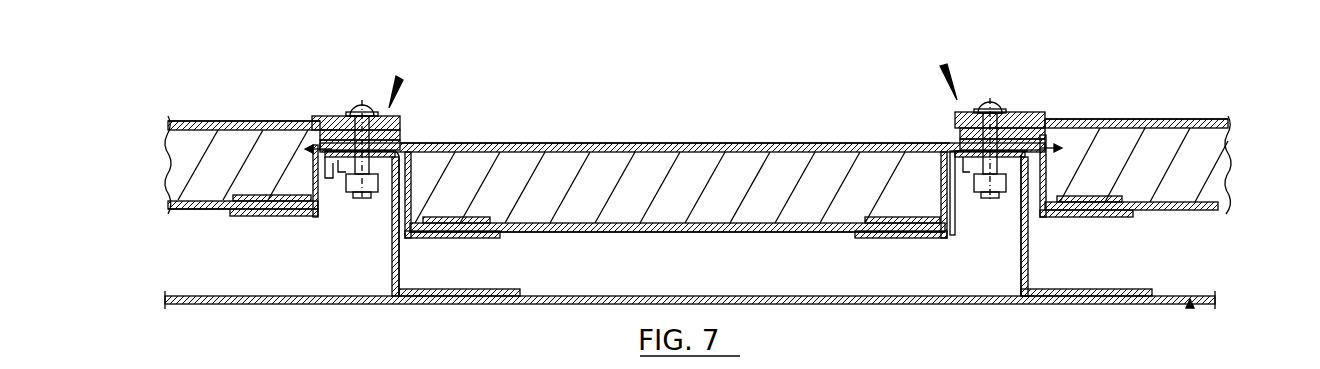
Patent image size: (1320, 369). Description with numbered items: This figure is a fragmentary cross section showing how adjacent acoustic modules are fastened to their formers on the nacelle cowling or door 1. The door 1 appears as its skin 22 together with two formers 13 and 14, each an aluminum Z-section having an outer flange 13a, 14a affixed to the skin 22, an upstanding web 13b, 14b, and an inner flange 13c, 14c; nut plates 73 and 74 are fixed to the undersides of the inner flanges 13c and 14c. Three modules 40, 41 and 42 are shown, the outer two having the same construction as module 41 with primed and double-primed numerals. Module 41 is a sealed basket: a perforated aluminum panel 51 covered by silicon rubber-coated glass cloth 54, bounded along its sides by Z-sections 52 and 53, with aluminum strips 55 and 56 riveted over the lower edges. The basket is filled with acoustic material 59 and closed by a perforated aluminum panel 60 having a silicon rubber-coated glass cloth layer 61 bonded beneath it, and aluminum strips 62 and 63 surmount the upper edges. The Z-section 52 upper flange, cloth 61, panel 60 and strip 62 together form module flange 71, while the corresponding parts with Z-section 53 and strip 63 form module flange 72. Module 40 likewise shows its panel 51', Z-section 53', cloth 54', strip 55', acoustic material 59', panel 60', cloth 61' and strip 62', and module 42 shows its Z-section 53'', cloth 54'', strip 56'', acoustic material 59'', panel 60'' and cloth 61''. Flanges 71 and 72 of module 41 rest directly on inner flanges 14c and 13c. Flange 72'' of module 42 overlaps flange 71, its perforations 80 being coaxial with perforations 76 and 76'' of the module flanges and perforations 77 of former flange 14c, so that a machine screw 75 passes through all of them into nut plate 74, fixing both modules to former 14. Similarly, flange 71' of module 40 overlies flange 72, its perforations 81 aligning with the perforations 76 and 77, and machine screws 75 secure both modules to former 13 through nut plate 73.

The nacelle cowling or door 1 is at (1190, 308).
The former 13 is at (392, 258).
The outer flange 13a is at (470, 296).
The upstanding web 13b is at (400, 270).
The inner flange 13c is at (340, 180).
The former 14 is at (1020, 262).
The outer flange 14a is at (1062, 295).
The upstanding web 14b is at (1030, 250).
The inner flange 14c is at (958, 212).
The door skin 22 is at (1080, 304).
The module 40 is at (265, 121).
The module 41 is at (625, 143).
The module 42 is at (1175, 119).
The perforated aluminum panel 51 is at (677, 252).
The perforated aluminum panel 51' is at (199, 229).
The Z-section 52 is at (941, 185).
The Z-section 53 is at (452, 195).
The Z-section 53' is at (274, 181).
The Z-section 53'' is at (1086, 176).
The silicon rubber-coated glass cloth 54 is at (677, 208).
The silicon rubber-coated glass cloth 54' is at (213, 198).
The silicon rubber-coated glass cloth 54'' is at (1163, 195).
The aluminum strip 55 is at (880, 199).
The aluminum strip 55' is at (272, 184).
The aluminum strip 56 is at (462, 207).
The aluminum strip 56'' is at (1128, 186).
The acoustic material 59 is at (750, 187).
The acoustic material 59' is at (243, 165).
The acoustic material 59'' is at (1144, 165).
The perforated aluminum panel 60 is at (675, 129).
The perforated aluminum panel 60' is at (240, 92).
The perforated aluminum panel 60'' is at (1157, 104).
The silicon rubber-coated glass cloth layer 61 is at (502, 187).
The silicon rubber-coated glass cloth layer 61' is at (139, 165).
The silicon rubber-coated glass cloth layer 61'' is at (1253, 165).
The aluminum strip 62 is at (975, 106).
The aluminum strip 62' is at (347, 101).
The aluminum strip 63 is at (405, 138).
The module flange 71 is at (1083, 148).
The module flange 71' is at (406, 85).
The module flange 72 is at (295, 152).
The module flange 72'' is at (941, 73).
The nut plate 73 is at (343, 170).
The nut plate 74 is at (978, 172).
The machine screw 75 is at (370, 104).
The perforation 76 is at (397, 133).
The perforation 76'' is at (1034, 103).
The perforation 77 is at (360, 194).
The perforation 80 is at (984, 106).
The perforation 81 is at (360, 108).